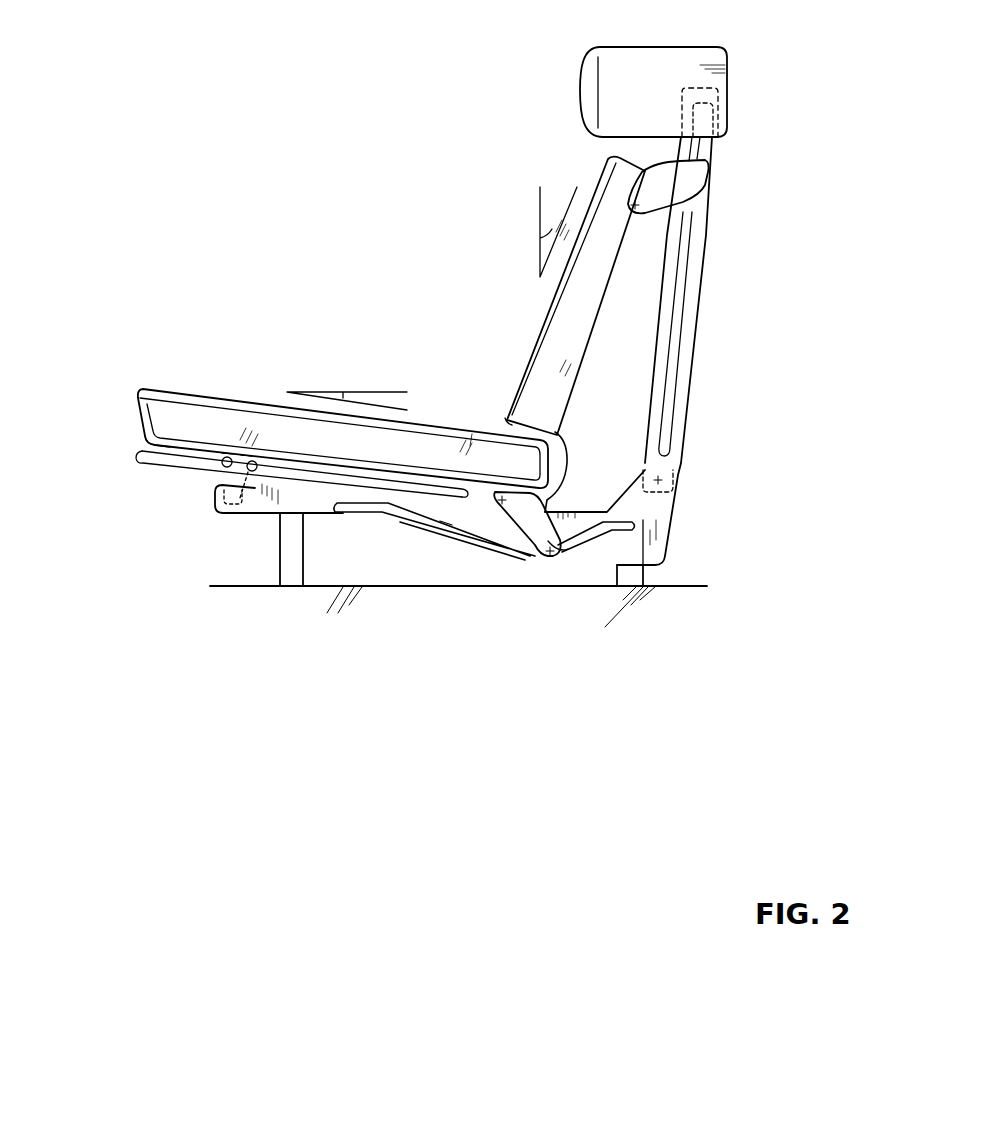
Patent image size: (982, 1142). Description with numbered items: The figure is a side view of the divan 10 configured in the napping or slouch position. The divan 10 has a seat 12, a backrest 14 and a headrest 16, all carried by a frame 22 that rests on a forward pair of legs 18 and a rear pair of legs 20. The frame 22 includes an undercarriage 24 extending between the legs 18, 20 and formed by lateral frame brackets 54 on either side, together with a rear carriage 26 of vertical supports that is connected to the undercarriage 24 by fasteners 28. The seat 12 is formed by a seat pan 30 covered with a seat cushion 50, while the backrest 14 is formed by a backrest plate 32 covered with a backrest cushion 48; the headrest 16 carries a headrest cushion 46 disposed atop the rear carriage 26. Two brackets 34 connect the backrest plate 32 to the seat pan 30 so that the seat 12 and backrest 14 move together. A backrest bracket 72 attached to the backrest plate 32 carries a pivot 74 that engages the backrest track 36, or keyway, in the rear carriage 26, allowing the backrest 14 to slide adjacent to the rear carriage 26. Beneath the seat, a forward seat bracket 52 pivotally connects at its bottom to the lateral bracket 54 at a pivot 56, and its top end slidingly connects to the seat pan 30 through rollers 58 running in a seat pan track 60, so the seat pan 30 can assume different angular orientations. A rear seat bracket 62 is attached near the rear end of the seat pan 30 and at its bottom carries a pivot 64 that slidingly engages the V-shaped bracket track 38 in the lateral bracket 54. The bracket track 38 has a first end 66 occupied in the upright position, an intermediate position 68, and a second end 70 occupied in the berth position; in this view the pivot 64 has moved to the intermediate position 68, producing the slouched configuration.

The divan 10 is at (368, 220).
The seat 12 is at (192, 400).
The backrest 14 is at (530, 373).
The headrest 16 is at (580, 105).
The forward pair of legs 18 is at (278, 555).
The rear pair of legs 20 is at (637, 577).
The frame 22 is at (738, 211).
The undercarriage 24 is at (213, 495).
The rear carriage 26 is at (680, 432).
The fasteners 28 is at (680, 478).
The seat pan 30 is at (137, 453).
The backrest plate 32 is at (577, 358).
The brackets 34 is at (560, 455).
The backrest track 36 is at (680, 301).
The bracket track 38 is at (445, 523).
The headrest cushion 46 is at (613, 82).
The backrest cushion 48 is at (507, 415).
The seat cushion 50 is at (210, 422).
The forward seat bracket 52 is at (212, 485).
The lateral frame bracket 54 is at (317, 515).
The pivot 56 is at (218, 497).
The rollers 58 is at (148, 450).
The seat pan track 60 is at (270, 470).
The rear seat bracket 62 is at (493, 523).
The pivot 64 is at (542, 556).
The first end 66 is at (622, 526).
The intermediate position 68 is at (565, 553).
The second end 70 is at (340, 503).
The backrest bracket 72 is at (677, 190).
The pivot 74 is at (697, 168).